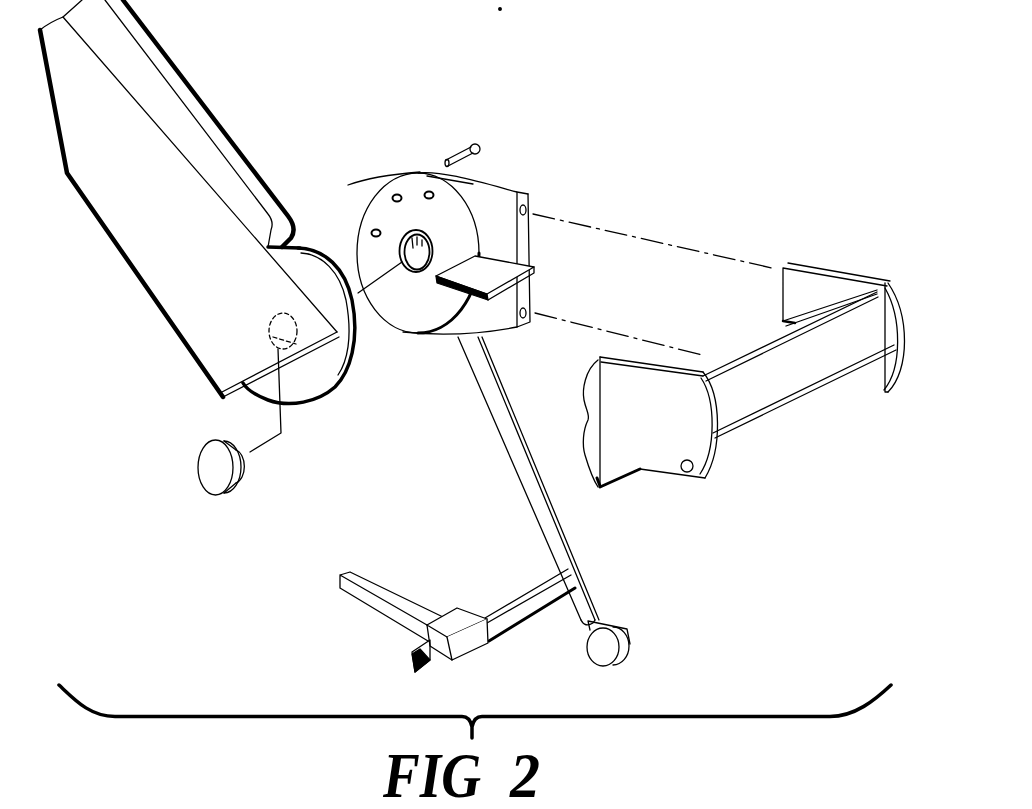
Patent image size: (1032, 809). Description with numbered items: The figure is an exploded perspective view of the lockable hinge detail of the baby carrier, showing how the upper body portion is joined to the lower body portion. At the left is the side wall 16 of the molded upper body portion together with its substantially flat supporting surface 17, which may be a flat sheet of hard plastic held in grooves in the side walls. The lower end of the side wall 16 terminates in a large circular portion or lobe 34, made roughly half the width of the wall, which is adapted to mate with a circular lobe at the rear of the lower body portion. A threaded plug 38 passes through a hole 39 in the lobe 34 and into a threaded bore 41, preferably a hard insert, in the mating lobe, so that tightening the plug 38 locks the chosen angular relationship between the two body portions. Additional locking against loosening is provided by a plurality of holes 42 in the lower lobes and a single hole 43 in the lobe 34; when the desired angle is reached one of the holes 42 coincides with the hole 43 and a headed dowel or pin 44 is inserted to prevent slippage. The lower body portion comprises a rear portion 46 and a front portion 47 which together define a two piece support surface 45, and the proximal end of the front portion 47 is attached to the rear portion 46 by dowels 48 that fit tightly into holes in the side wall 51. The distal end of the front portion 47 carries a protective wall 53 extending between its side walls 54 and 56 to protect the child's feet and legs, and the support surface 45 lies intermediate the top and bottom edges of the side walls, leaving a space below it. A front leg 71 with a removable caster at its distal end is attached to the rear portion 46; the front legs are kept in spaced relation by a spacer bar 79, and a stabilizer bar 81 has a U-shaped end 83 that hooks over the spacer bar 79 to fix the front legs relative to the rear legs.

The side wall 16 is at (142, 25).
The supporting surface 17 is at (118, 117).
The circular portion or lobe 34 is at (297, 393).
The threaded plug 38 is at (213, 470).
The hole 39 is at (293, 356).
The threaded bore 41 is at (416, 262).
The holes 42 is at (425, 193).
The hole 43 is at (303, 268).
The headed dowel or pin 44 is at (446, 160).
The support surface 45 is at (470, 296).
The rear portion 46 is at (465, 253).
The front portion 47 is at (730, 378).
The dowels 48 is at (778, 275).
The side wall 51 is at (523, 190).
The protective wall 53 is at (785, 372).
The side wall 54 is at (625, 443).
The side wall 56 is at (901, 303).
The front leg 71 is at (500, 423).
The spacer bar 79 is at (517, 612).
The stabilizer bar 81 is at (375, 578).
The U-shaped end 83 is at (446, 607).